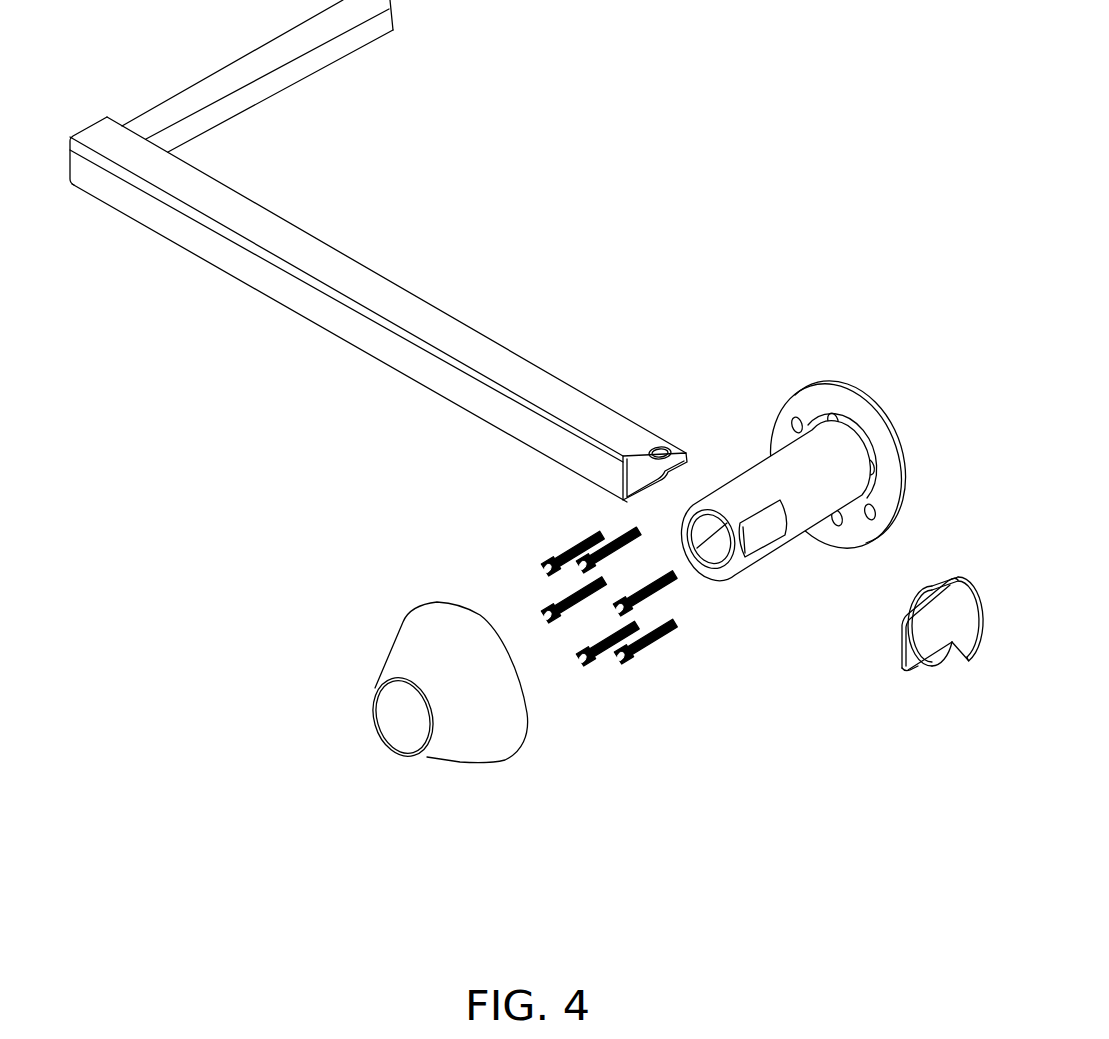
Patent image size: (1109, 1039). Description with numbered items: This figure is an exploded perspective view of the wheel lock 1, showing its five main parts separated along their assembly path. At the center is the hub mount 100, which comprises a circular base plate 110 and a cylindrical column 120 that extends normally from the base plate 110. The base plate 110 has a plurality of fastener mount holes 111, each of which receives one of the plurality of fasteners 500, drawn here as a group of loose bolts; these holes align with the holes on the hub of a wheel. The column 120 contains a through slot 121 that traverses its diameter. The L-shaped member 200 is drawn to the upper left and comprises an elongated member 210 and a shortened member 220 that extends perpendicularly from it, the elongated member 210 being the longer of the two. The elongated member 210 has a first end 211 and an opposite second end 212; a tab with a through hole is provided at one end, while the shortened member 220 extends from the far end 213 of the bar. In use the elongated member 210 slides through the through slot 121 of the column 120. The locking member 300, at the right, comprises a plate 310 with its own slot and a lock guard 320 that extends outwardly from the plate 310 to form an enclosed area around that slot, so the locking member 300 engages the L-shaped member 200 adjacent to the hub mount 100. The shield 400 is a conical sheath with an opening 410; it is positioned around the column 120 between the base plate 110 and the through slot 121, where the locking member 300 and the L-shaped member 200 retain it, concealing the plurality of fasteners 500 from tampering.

The mounting assembly 1 is at (772, 218).
The hub mount 100 is at (814, 372).
The base plate 110 is at (862, 432).
The fastener mount holes 111 is at (878, 500).
The column 120 is at (770, 468).
The through slot 121 is at (766, 527).
The L-shaped member 200 is at (413, 270).
The elongated member 210 is at (288, 289).
The first end 211 is at (604, 467).
The second end 212 is at (681, 447).
The second end 213 is at (93, 108).
The shortened member 220 is at (356, 38).
The locking member 300 is at (890, 617).
The plate 310 is at (905, 672).
The lock guard 320 is at (910, 592).
The shield 400 is at (497, 740).
The opening 410 is at (401, 716).
The plurality of fasteners 500 is at (706, 617).